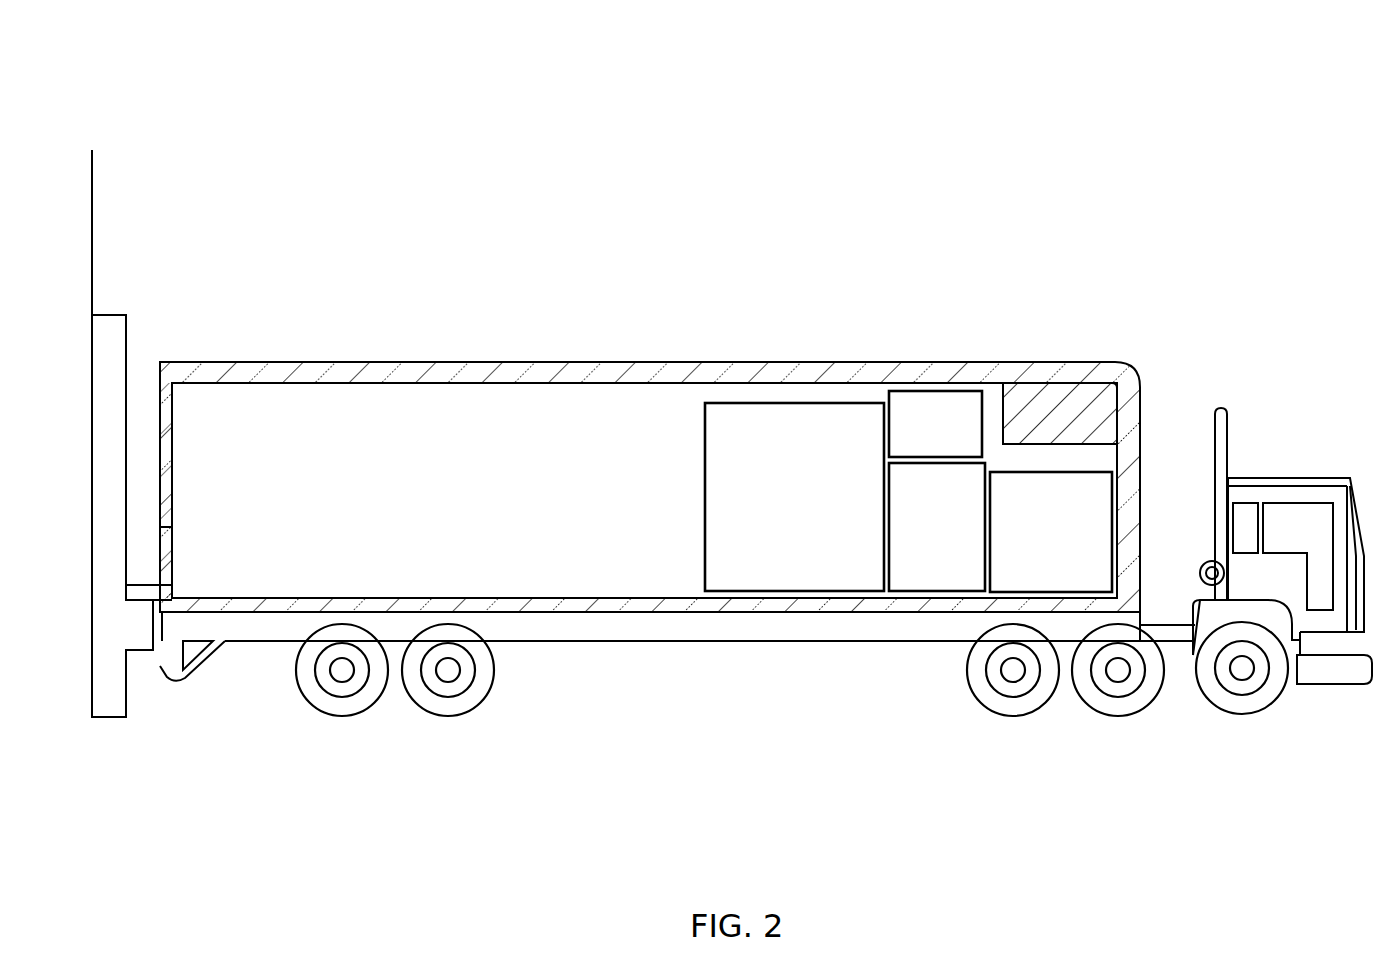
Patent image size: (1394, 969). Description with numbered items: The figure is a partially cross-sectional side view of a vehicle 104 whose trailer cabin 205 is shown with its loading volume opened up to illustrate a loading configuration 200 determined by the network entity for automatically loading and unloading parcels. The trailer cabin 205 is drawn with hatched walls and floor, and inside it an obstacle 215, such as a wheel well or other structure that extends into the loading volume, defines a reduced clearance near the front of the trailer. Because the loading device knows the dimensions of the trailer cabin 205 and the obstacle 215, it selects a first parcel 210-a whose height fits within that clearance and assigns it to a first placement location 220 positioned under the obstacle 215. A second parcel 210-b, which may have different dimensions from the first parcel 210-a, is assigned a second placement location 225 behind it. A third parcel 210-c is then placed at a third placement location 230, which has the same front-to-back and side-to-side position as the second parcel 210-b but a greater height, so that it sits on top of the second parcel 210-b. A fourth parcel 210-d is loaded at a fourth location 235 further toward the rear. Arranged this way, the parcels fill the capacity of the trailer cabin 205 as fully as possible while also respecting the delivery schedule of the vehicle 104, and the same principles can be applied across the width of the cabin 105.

The loading configuration 200 is at (98, 50).
The vehicle 104 is at (1342, 480).
The cabin 105 is at (557, 456).
The trailer cabin 205 is at (981, 360).
The obstacle 215 is at (1063, 398).
The first placement location 220 is at (1062, 486).
The third placement location 230 is at (878, 380).
The fourth location 235 is at (791, 614).
The second placement location 225 is at (933, 616).
The first parcel 210-a is at (1051, 532).
The second parcel 210-b is at (937, 527).
The third parcel 210-c is at (935, 424).
The fourth parcel 210-d is at (794, 497).